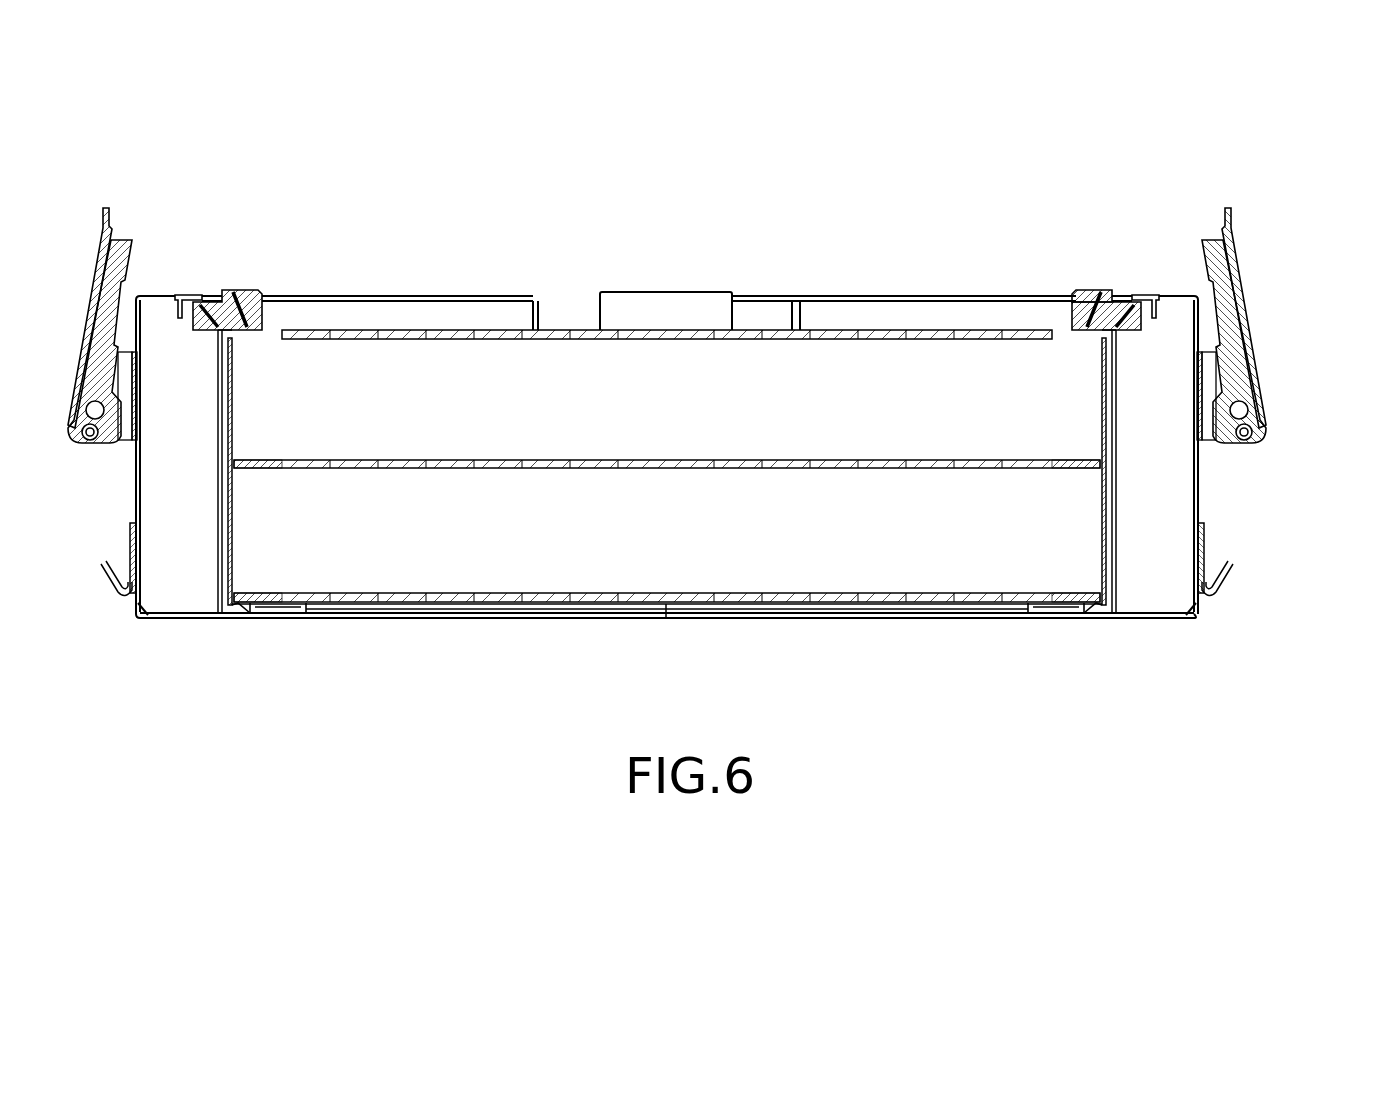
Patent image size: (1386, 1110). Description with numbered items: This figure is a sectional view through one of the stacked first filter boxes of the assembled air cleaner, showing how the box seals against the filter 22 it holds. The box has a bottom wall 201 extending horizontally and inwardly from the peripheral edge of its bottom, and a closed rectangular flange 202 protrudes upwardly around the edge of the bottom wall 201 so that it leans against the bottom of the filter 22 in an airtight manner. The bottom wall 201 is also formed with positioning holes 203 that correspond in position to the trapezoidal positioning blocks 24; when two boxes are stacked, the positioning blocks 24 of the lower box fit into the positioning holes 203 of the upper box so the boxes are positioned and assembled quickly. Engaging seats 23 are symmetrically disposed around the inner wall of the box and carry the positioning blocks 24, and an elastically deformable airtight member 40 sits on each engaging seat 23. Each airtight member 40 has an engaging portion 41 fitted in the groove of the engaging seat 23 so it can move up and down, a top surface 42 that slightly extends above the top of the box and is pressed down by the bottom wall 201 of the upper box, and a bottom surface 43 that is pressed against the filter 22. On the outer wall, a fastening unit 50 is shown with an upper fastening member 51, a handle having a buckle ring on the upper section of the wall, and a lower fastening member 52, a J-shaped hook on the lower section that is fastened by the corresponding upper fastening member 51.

The filter 22 is at (385, 330).
The engaging seat 23 is at (1115, 478).
The positioning block 24 is at (194, 293).
The airtight member 40 is at (773, 263).
The engaging portion 41 is at (1126, 300).
The top surface 42 is at (1083, 290).
The bottom surface 43 is at (1080, 330).
The fastening unit 50 is at (1250, 318).
The upper fastening member 51 is at (1232, 252).
The lower fastening member 52 is at (1203, 545).
The bottom wall 201 is at (290, 618).
The flange 202 is at (238, 618).
The positioning hole 203 is at (190, 618).